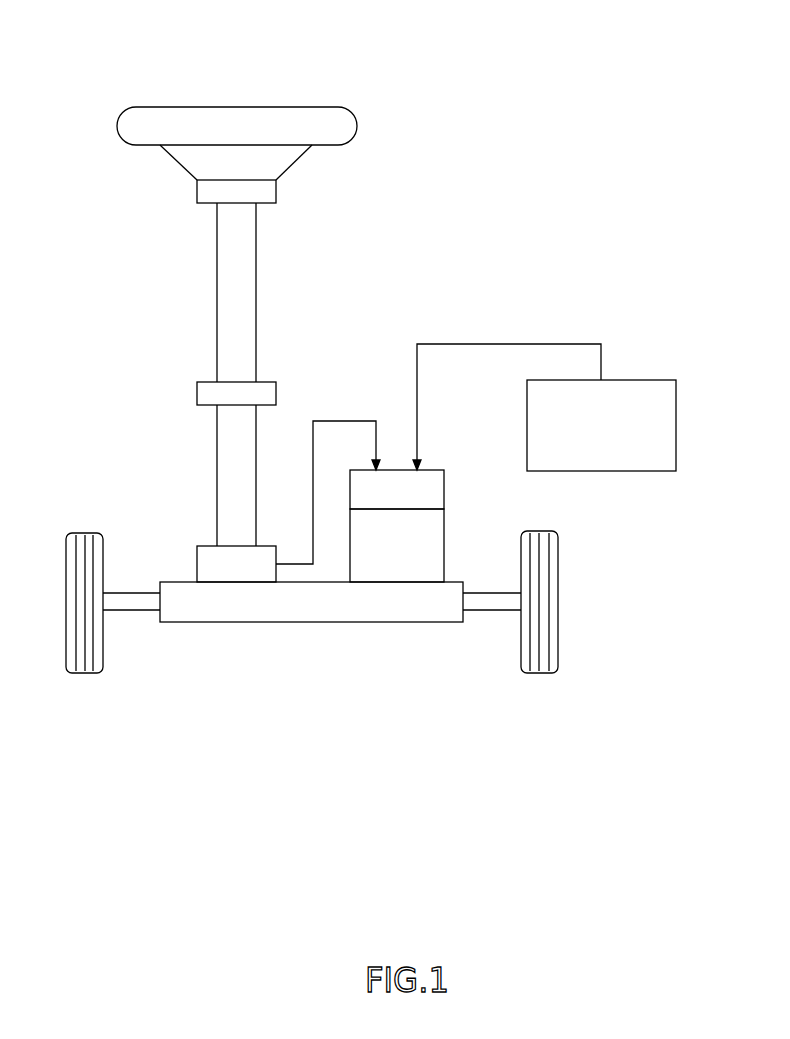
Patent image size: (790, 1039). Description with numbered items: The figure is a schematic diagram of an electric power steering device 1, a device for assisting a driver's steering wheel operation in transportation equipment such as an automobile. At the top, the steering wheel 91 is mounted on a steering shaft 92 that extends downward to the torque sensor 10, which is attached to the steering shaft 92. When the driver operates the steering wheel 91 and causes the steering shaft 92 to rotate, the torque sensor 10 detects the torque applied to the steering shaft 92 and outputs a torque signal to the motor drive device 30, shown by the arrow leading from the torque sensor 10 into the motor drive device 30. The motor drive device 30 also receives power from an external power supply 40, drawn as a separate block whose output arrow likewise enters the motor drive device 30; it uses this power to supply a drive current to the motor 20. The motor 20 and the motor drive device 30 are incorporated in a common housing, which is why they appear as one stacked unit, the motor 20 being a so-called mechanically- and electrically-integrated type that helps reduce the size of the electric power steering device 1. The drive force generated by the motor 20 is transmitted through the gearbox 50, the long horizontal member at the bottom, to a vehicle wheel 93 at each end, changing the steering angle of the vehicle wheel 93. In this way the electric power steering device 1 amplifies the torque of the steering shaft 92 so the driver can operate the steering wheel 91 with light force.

The electric power steering device 1 is at (499, 130).
The torque sensor 10 is at (197, 546).
The motor 20 is at (445, 540).
The motor drive device 30 is at (445, 488).
The external power supply 40 is at (631, 380).
The gearbox 50 is at (400, 622).
The steering wheel 91 is at (277, 107).
The steering shaft 92 is at (258, 300).
The vehicle wheel 93 is at (558, 630).